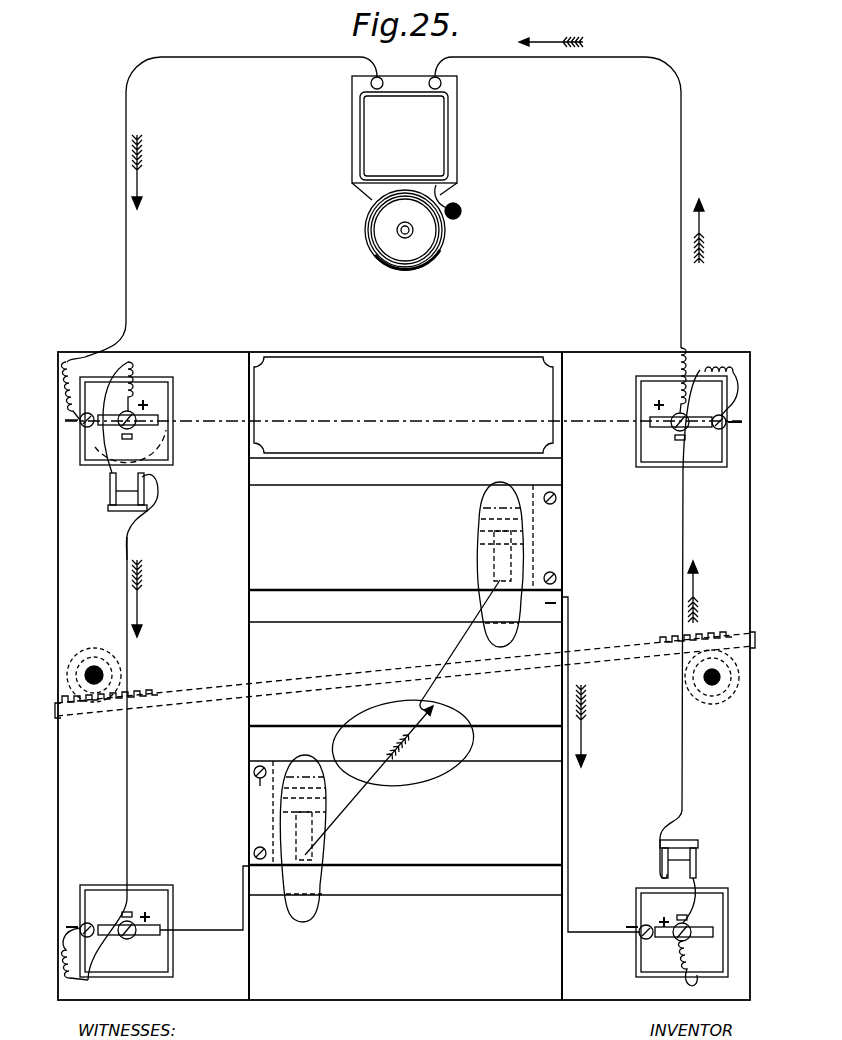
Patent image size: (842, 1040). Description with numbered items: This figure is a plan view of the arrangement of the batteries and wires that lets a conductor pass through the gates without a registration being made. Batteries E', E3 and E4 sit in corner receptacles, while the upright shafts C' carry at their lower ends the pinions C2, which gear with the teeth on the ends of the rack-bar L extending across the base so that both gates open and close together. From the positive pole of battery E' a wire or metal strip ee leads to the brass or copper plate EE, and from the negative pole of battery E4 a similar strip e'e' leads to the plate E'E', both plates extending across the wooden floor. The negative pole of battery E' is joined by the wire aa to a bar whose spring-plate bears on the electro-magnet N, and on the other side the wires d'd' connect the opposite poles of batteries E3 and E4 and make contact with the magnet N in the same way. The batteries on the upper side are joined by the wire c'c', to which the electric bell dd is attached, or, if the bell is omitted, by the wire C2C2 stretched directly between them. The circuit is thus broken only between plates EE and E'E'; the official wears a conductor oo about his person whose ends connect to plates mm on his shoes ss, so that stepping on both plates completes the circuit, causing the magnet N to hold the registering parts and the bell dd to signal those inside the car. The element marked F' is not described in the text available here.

The wire c'c' is at (391, 209).
The electric bell dd is at (410, 173).
The relay magnet and switch F' is at (117, 417).
The electro-magnet N is at (108, 505).
The wire C2C2 is at (403, 405).
The plate E'E' is at (460, 544).
The plate EE is at (325, 813).
The wire or metal strip ee is at (239, 841).
The plates mm is at (401, 702).
The shoes ss is at (402, 747).
The wire or electrical conductor oo is at (402, 717).
The rack-bar L is at (341, 682).
The shaft C' is at (411, 667).
The pinion C2 is at (93, 650).
The wire d'd' is at (688, 646).
The wire or metal strip e'e' is at (601, 764).
The wire aa is at (130, 820).
The battery E' is at (117, 932).
The battery E3 is at (636, 393).
The battery E4 is at (636, 899).